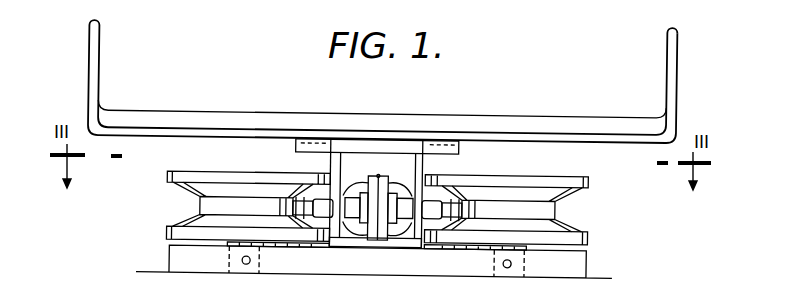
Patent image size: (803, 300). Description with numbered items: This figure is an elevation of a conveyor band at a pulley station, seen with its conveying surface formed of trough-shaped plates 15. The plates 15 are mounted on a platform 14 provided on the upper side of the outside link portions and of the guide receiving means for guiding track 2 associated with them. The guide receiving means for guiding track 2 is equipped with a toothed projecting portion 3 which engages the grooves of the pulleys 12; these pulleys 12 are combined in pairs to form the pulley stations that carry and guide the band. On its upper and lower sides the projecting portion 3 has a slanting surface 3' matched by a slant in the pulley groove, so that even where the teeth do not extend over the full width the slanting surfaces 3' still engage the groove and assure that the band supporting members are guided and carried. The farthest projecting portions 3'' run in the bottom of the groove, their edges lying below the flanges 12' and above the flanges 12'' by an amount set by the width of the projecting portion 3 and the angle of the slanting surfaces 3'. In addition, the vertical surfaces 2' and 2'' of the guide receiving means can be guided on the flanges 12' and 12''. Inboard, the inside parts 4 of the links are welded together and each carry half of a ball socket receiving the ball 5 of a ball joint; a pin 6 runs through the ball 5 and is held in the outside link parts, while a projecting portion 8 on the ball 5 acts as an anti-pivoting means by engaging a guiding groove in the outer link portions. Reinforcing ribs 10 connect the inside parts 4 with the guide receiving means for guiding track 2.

The guide receiving means for guiding track 2 is at (388, 218).
The vertical surface 2' is at (338, 165).
The vertical surface 2'' is at (375, 257).
The toothed projecting portion 3 is at (377, 239).
The slanting surface 3' is at (346, 210).
The farthest projecting portions 3'' is at (371, 235).
The inside parts of the links 4 is at (379, 240).
The ball 5 is at (392, 230).
The pin 6 is at (407, 234).
The projecting portion 8 is at (362, 188).
The reinforcing ribs 10 is at (399, 178).
The pulleys 12 is at (391, 207).
The flange 12' is at (377, 133).
The flange 12'' is at (379, 260).
The platform 14 is at (408, 150).
The trough-shaped plates 15 is at (666, 81).